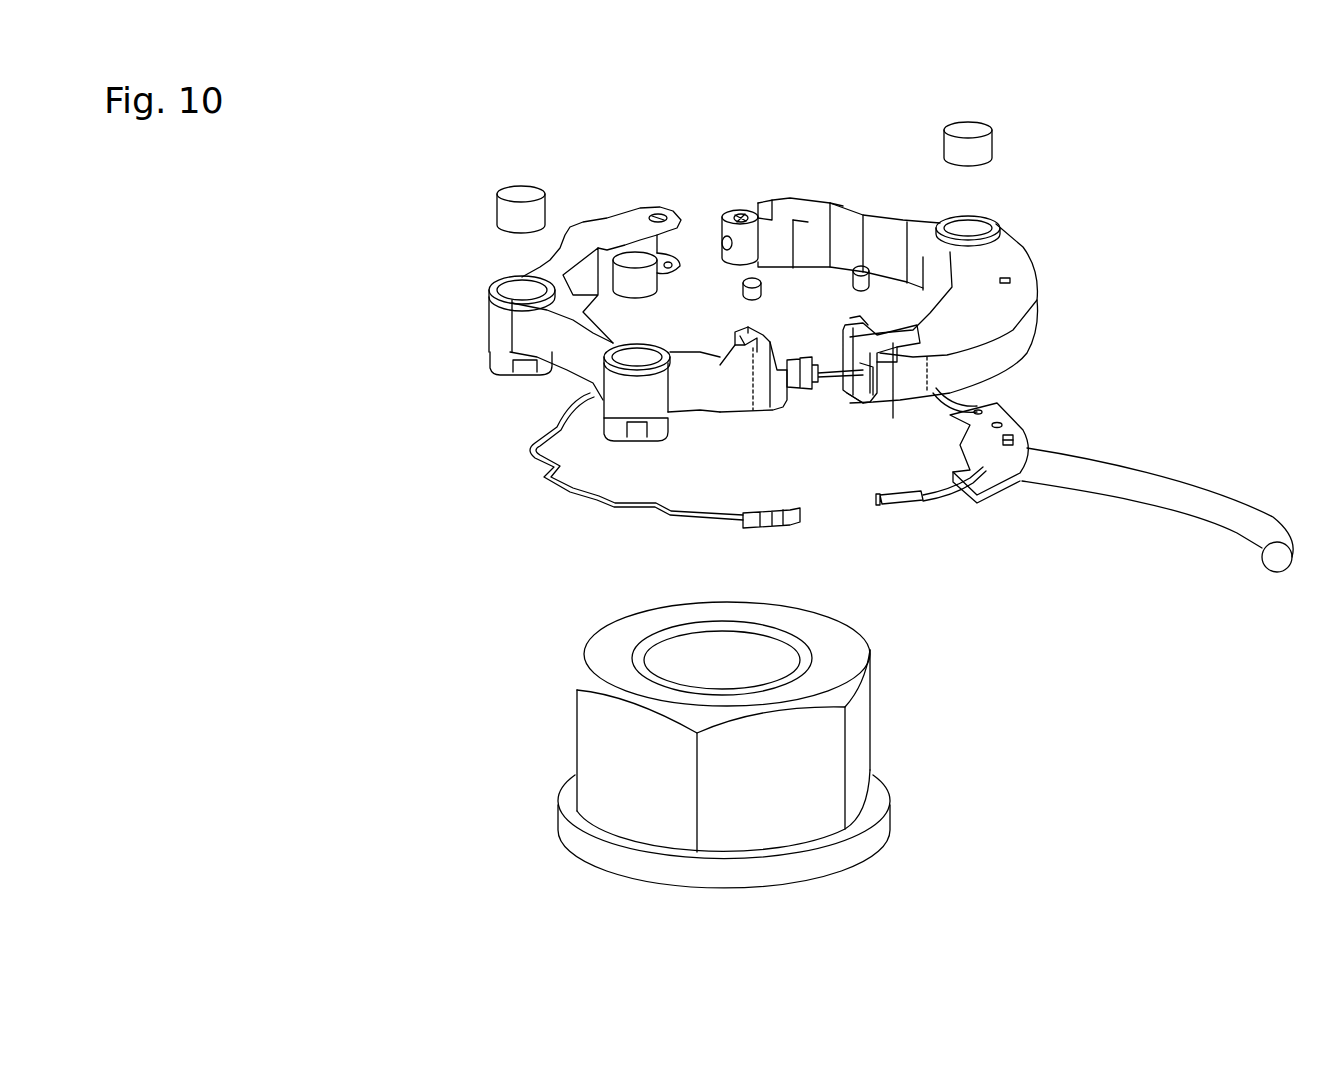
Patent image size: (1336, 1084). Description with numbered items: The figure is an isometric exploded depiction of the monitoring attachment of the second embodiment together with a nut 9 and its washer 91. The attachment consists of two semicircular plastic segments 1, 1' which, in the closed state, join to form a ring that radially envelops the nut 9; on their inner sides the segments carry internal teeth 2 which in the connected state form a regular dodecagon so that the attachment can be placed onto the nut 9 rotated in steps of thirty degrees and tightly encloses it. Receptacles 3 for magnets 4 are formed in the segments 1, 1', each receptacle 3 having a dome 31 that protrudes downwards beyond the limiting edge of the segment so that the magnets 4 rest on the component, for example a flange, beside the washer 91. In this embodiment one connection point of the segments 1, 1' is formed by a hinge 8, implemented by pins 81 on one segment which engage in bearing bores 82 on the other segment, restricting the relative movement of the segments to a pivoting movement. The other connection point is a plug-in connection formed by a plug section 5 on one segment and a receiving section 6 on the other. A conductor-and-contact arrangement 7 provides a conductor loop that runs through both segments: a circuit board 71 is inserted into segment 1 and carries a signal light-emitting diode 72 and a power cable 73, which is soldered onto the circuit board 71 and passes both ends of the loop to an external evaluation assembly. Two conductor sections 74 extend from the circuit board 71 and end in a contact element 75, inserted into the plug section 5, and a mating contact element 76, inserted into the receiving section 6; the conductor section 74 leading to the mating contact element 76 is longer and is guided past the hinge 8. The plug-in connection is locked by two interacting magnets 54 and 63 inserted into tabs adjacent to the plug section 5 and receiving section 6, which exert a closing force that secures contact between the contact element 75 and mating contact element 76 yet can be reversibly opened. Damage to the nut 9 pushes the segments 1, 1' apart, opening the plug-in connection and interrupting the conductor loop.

The semicircular segment 1 is at (940, 300).
The semicircular segment 1' is at (540, 298).
The internal teeth 2 is at (850, 245).
The receptacle 3 is at (490, 289).
The magnet 4 is at (505, 185).
The plug section 5 is at (781, 425).
The receiving section 6 is at (855, 425).
The conductor-and-contact arrangement 7 is at (1125, 617).
The hinge 8 is at (708, 186).
The nut 9 is at (857, 704).
The dome 31 is at (500, 372).
The magnet 54 is at (740, 292).
The magnet 63 is at (875, 280).
The circuit board 71 is at (1012, 425).
The signal light-emitting diode 72 is at (1027, 462).
The power cable 73 is at (1224, 512).
The conductor section 74 is at (578, 487).
The contact element 75 is at (775, 520).
The mating contact element 76 is at (915, 510).
The pin 81 is at (750, 212).
The bearing bore 82 is at (654, 214).
The washer 91 is at (572, 822).